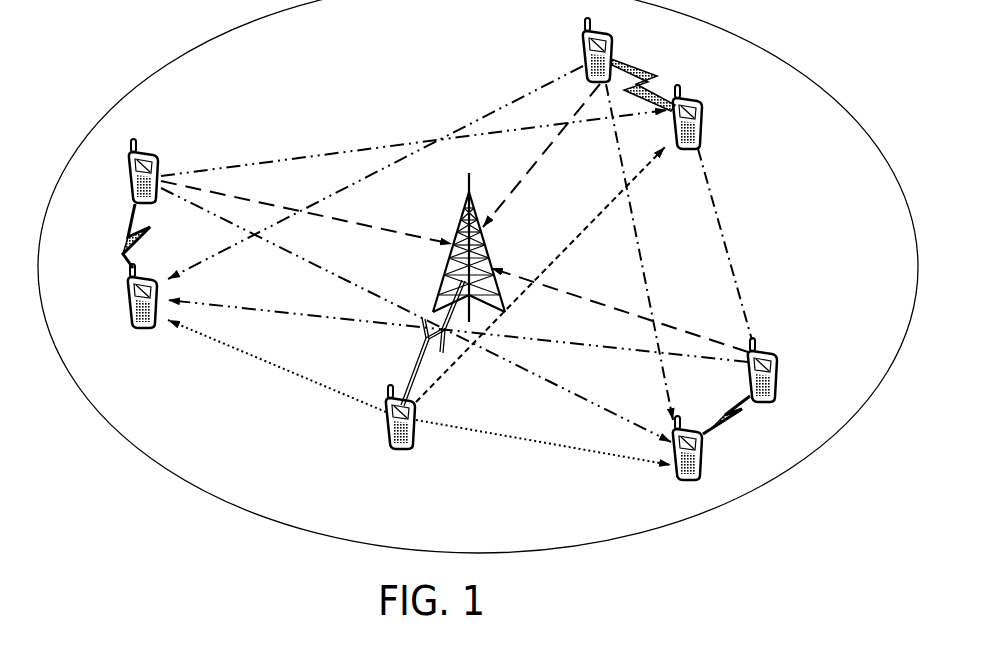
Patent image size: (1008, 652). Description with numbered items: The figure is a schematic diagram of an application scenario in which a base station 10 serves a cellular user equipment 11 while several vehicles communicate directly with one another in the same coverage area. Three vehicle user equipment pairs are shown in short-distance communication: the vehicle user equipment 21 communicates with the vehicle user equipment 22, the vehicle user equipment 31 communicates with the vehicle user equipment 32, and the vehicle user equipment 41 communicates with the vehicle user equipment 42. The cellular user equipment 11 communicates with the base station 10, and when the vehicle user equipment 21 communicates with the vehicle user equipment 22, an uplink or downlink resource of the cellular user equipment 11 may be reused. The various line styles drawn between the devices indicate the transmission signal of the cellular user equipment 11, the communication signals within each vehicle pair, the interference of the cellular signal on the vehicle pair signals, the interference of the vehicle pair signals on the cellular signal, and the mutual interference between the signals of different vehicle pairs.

The base station 10 is at (460, 222).
The cellular user equipment 11 is at (389, 447).
The vehicle user equipment 21 is at (149, 165).
The vehicle user equipment 22 is at (130, 322).
The vehicle user equipment 31 is at (583, 76).
The vehicle user equipment 32 is at (704, 126).
The vehicle user equipment 41 is at (774, 353).
The vehicle user equipment 42 is at (682, 480).